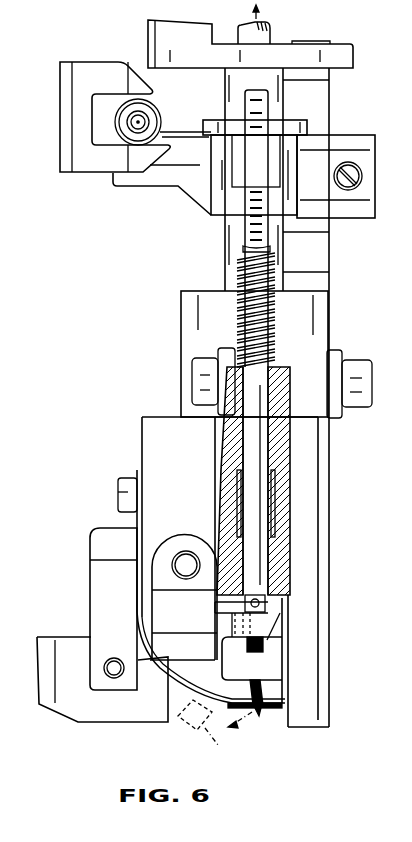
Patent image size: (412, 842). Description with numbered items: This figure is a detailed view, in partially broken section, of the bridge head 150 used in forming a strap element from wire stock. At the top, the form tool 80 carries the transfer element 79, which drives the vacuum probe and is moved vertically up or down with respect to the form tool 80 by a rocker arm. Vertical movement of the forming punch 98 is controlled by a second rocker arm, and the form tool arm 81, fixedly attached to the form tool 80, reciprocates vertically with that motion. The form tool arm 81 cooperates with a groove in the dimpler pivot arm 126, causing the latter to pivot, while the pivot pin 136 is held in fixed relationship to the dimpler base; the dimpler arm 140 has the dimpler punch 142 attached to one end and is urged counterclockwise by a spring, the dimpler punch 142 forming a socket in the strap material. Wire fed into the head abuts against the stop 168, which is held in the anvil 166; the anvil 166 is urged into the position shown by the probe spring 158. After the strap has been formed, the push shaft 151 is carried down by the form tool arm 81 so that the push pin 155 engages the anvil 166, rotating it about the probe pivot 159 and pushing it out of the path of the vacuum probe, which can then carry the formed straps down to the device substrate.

The form tool 80 is at (165, 41).
The transfer element 79 is at (268, 34).
The dimpler pivot arm 126 is at (78, 112).
The forming punch 98 is at (305, 129).
The form tool arm 81 is at (222, 206).
The push shaft 151 is at (265, 256).
The probe pivot 159 is at (186, 560).
The probe spring 158 is at (137, 584).
The pivot pin 136 is at (108, 660).
The bridge head 150 is at (168, 674).
The dimpler arm 140 is at (65, 706).
The anvil 166 is at (232, 680).
The stop 168 is at (262, 688).
The push pin 155 is at (262, 604).
The dimpler punch 142 is at (258, 714).